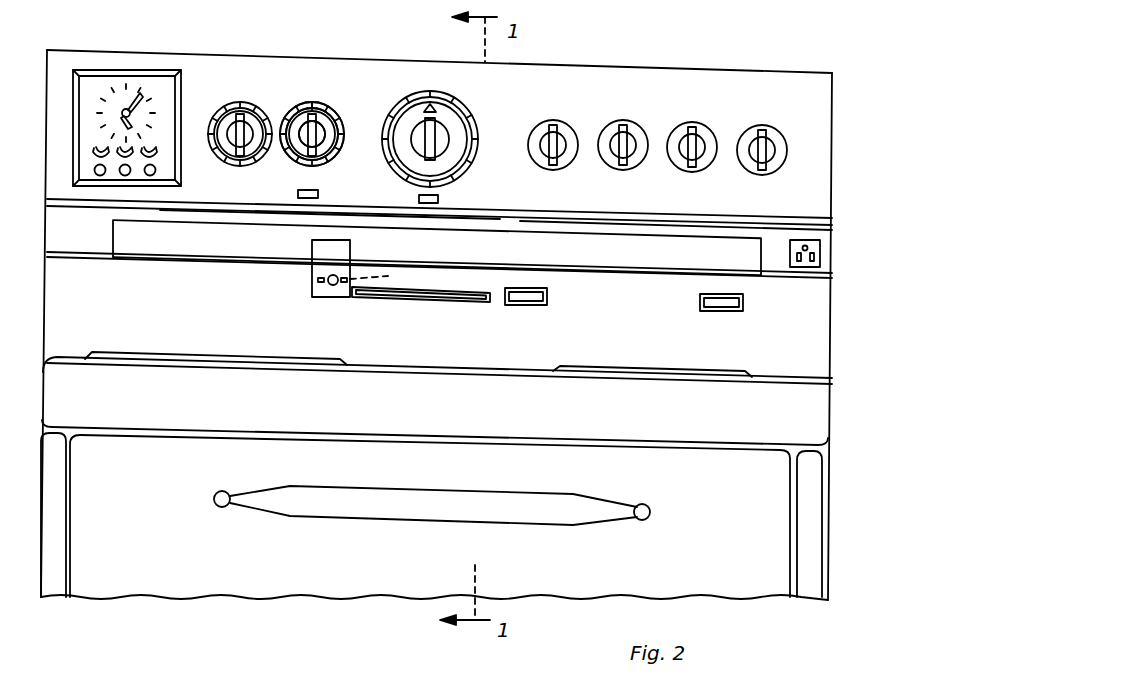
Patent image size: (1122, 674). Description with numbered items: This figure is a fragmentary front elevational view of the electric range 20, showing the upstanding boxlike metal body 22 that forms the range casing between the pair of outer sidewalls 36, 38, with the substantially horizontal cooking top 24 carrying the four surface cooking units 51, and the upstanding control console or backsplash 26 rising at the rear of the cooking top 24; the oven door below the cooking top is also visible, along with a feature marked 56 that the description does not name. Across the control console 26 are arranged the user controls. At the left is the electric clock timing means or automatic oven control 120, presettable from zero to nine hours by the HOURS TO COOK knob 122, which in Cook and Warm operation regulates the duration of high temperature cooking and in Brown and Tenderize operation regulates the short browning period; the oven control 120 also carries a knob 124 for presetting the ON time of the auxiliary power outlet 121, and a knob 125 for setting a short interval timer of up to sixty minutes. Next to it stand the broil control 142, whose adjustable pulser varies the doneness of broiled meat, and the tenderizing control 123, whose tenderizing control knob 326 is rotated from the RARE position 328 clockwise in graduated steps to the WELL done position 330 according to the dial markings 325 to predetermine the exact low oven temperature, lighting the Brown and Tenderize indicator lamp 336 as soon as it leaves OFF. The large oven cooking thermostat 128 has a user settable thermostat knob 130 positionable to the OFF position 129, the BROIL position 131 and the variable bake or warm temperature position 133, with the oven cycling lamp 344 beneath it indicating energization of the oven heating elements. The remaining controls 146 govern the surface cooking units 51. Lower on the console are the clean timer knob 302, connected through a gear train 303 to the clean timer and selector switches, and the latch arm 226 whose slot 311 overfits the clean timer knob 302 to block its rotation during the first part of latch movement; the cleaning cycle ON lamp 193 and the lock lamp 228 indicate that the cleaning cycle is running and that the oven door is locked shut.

The electric range 20 is at (116, 598).
The metal body 22 is at (430, 385).
The cooking top 24 is at (66, 356).
The control console 26 is at (646, 74).
The outer sidewall 36 is at (42, 572).
The outer sidewall 38 is at (828, 550).
The surface cooking units 51 is at (208, 356).
The door handle 56 is at (214, 570).
The automatic oven control 120 is at (134, 70).
The auxiliary power outlet 121 is at (806, 268).
The HOURS TO COOK knob 122 is at (126, 177).
The tenderizing control 123 is at (364, 197).
The knob 124 is at (157, 170).
The knob 125 is at (96, 177).
The oven cooking thermostat 128 is at (415, 96).
The OFF position 129 is at (433, 96).
The thermostat knob 130 is at (433, 128).
The BROIL position 131 is at (392, 120).
The variable bake or warm temperature position 133 is at (455, 175).
The broil control 142 is at (258, 104).
The surface unit controls 146 is at (600, 122).
The cleaning cycle ON lamp 193 is at (531, 300).
The latch arm 226 is at (375, 298).
The lock lamp 228 is at (727, 304).
The clean timer knob 302 is at (312, 280).
The gear train 303 is at (372, 673).
The slot 311 is at (389, 276).
The dial markings 325 is at (312, 103).
The tenderizing control knob 326 is at (300, 128).
The RARE position 328 is at (326, 104).
The WELL done position 330 is at (302, 104).
The Brown and Tenderize indicator lamp 336 is at (298, 192).
The oven cycling lamp 344 is at (429, 204).